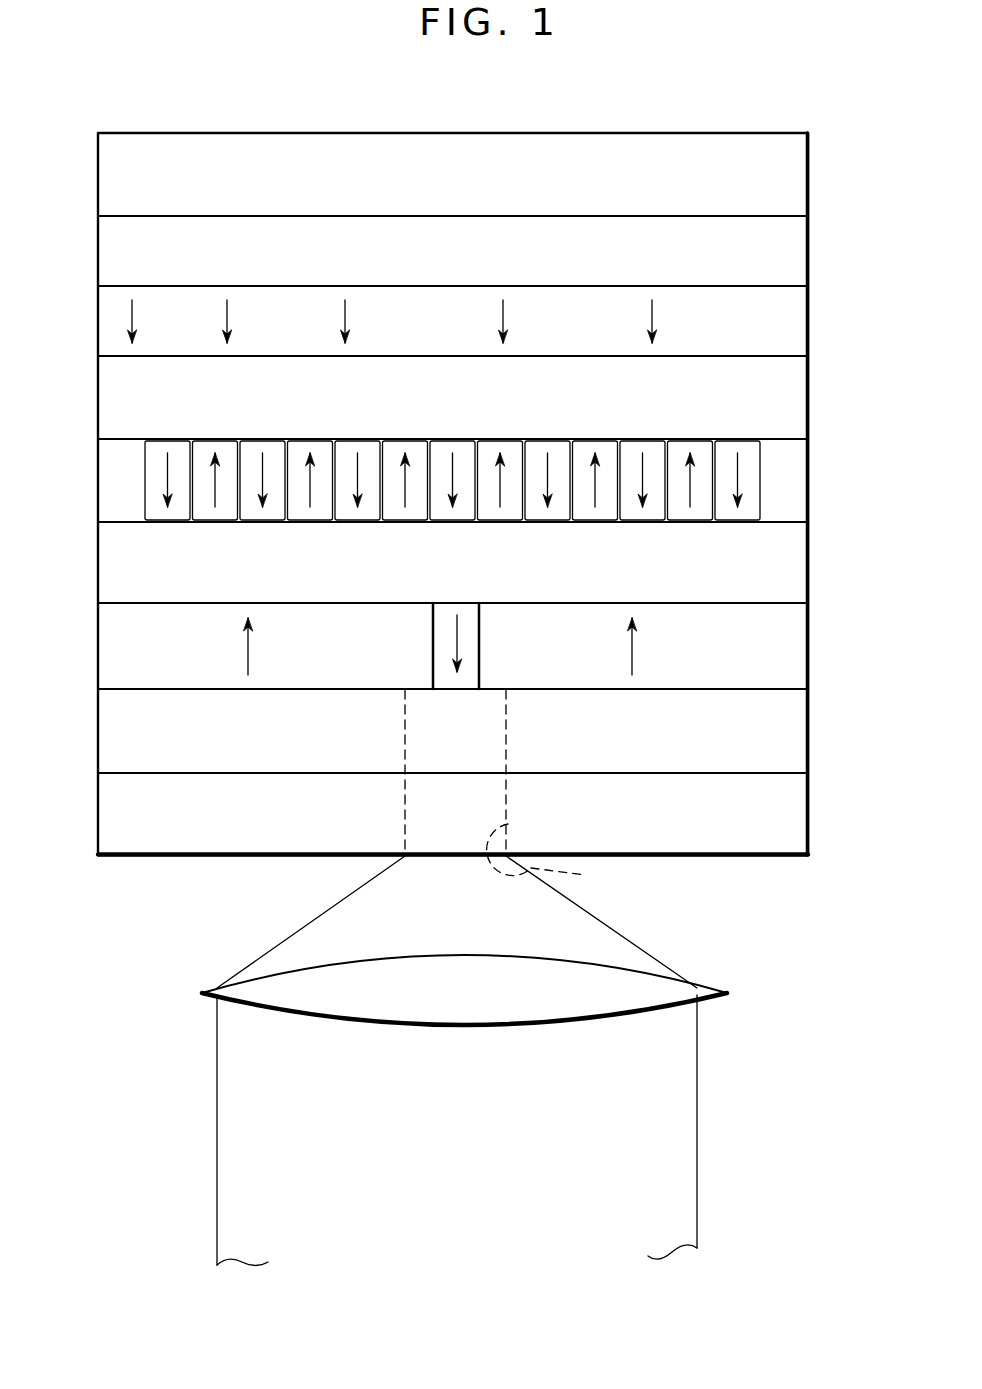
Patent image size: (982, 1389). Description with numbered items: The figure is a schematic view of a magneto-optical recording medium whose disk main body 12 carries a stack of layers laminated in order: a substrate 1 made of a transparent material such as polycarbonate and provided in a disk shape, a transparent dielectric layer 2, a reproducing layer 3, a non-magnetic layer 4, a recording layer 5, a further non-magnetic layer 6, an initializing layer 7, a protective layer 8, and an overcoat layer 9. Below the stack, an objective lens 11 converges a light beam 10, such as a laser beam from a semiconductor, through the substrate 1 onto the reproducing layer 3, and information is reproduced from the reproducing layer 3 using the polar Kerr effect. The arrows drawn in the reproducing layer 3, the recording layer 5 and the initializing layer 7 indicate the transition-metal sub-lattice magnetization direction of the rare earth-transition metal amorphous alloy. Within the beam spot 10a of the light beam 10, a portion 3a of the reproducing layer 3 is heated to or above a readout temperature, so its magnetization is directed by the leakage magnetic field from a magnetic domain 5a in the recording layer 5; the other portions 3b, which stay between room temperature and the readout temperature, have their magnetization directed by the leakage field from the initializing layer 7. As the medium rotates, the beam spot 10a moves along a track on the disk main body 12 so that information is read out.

The substrate 1 is at (787, 826).
The transparent dielectric layer 2 is at (790, 748).
The reproducing layer 3 is at (476, 682).
The portion heated to or above the readout temperature 3a is at (468, 690).
The other portions of the reproducing layer 3b is at (332, 678).
The non-magnetic layer 4 is at (788, 583).
The recording layer 5 is at (476, 514).
The magnetic domain 5a is at (467, 515).
The non-magnetic layer 6 is at (792, 412).
The initializing layer 7 is at (790, 331).
The protective layer 8 is at (794, 262).
The overcoat layer 9 is at (789, 193).
The light beam 10 is at (600, 925).
The beam spot 10a is at (571, 861).
The objective lens 11 is at (727, 993).
The disk main body 12 is at (78, 345).